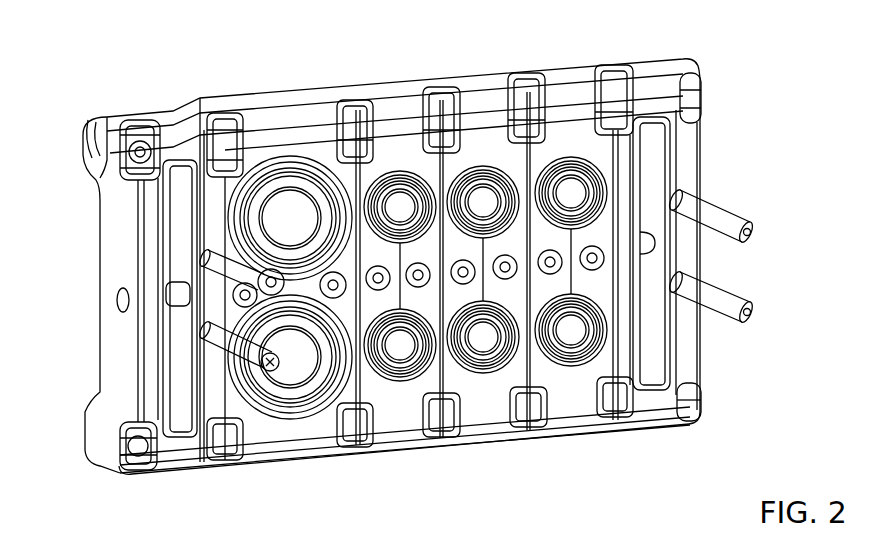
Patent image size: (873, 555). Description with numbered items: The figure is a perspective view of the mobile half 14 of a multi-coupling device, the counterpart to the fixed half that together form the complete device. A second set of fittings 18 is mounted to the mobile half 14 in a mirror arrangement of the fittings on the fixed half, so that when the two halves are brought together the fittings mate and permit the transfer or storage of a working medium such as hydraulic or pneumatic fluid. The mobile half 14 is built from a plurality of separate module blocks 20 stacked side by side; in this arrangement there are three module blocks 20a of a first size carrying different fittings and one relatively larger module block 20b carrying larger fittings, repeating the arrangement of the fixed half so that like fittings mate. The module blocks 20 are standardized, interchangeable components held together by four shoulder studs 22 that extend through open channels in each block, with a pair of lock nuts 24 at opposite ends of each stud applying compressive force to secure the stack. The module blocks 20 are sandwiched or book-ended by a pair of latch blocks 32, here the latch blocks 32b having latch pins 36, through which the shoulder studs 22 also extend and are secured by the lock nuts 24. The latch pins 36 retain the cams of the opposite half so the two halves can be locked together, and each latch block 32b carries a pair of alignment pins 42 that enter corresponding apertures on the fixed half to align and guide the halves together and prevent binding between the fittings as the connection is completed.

The mobile half 14 is at (128, 128).
The second set of fittings 18 is at (303, 212).
The module blocks 20 is at (395, 438).
The module blocks of a first size 20a is at (538, 78).
The relatively larger module block 20b is at (257, 105).
The shoulder studs 22 is at (613, 403).
The lock nuts 24 is at (135, 470).
The latch blocks 32 is at (693, 360).
The latch blocks having latch pins 32b is at (117, 348).
The latch pins 36 is at (173, 293).
The alignment pins 42 is at (727, 207).